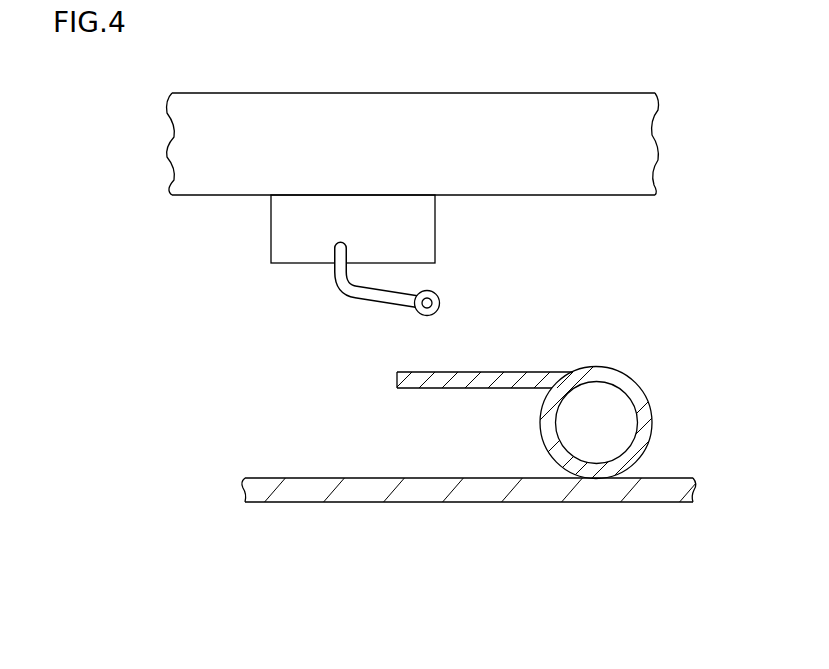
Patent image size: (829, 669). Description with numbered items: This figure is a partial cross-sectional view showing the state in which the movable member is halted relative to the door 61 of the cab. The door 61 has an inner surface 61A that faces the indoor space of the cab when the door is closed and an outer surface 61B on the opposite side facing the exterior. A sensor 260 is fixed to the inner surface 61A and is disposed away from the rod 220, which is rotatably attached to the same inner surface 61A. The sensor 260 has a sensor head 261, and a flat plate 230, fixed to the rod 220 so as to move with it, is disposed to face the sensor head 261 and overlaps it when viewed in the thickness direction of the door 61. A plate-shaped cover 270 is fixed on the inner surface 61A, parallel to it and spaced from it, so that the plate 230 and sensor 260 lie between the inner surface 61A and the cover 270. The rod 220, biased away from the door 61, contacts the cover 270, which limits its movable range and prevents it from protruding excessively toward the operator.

The door 61 is at (516, 128).
The inner surface 61A is at (616, 197).
The outer surface 61B is at (615, 93).
The sensor 260 is at (258, 257).
The sensor head 261 is at (370, 300).
The plate 230 is at (487, 382).
The rod 220 is at (648, 431).
The cover 270 is at (474, 489).